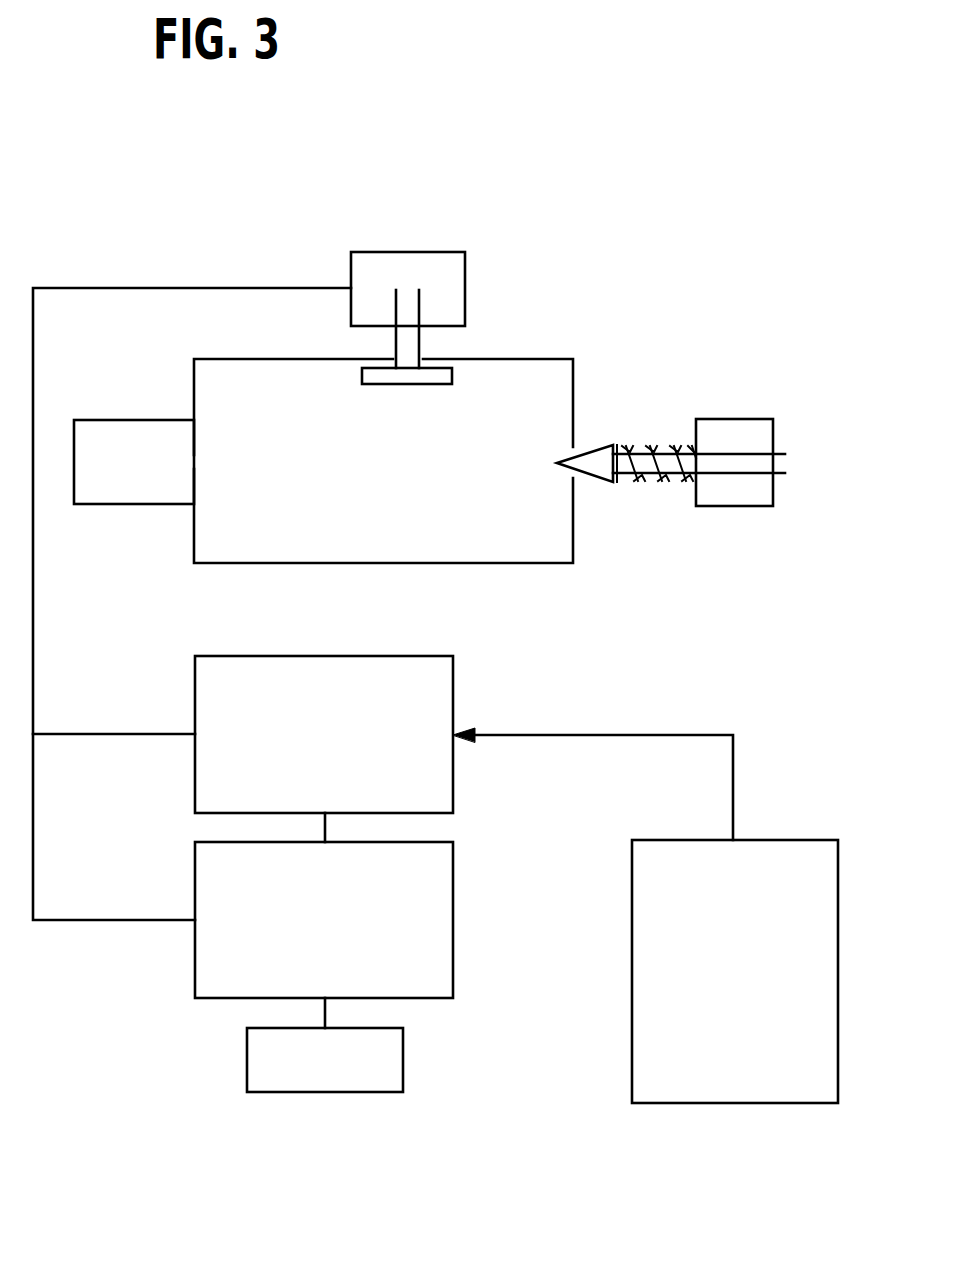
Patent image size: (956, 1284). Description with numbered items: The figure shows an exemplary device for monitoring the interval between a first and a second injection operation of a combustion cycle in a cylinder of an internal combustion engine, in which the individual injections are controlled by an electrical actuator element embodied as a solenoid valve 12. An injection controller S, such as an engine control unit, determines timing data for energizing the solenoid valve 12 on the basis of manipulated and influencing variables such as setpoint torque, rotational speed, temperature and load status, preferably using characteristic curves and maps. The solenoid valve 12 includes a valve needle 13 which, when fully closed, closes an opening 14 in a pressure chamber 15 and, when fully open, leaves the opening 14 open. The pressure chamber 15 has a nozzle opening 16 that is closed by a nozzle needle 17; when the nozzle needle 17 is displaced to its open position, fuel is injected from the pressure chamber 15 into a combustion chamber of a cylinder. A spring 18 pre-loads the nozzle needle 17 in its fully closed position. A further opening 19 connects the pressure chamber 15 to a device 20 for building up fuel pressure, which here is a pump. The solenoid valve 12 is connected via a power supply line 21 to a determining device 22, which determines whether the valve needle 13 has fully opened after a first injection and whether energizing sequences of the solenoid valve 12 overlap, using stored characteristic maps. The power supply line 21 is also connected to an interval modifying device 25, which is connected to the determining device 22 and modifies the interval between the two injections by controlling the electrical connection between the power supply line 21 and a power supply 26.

The solenoid valve 12 is at (407, 252).
The valve needle 13 is at (421, 347).
The opening 14 is at (393, 356).
The pressure chamber 15 is at (573, 388).
The nozzle opening 16 is at (570, 452).
The nozzle needle 17 is at (598, 443).
The spring 18 is at (632, 483).
The opening 19 is at (195, 461).
The device for building up fuel pressure 20 is at (128, 420).
The power supply line 21 is at (117, 734).
The determining device 22 is at (453, 680).
The interval modifying device 25 is at (453, 912).
The power supply 26 is at (247, 1053).
The injection controller S is at (790, 840).